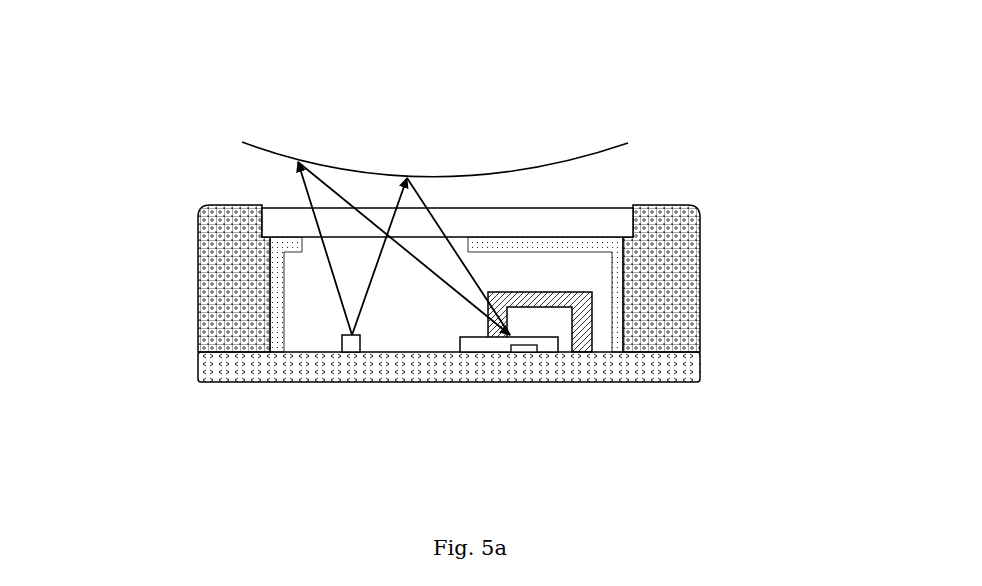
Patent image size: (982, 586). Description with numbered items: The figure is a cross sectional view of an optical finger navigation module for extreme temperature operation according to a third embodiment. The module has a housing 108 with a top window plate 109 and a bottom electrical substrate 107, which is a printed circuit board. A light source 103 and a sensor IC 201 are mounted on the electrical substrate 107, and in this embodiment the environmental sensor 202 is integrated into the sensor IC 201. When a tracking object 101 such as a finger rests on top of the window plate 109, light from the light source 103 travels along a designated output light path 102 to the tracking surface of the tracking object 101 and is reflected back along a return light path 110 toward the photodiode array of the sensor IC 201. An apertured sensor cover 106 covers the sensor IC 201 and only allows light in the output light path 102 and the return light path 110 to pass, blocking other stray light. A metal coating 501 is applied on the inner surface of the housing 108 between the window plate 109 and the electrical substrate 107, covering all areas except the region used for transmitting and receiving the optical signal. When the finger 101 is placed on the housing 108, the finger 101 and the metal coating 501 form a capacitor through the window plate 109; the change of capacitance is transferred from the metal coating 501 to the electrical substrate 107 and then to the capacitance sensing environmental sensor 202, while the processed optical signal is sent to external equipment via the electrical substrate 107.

The tracking object 101 is at (217, 48).
The output light path 102 is at (94, 195).
The light source 103 is at (229, 481).
The apertured sensor cover 106 is at (674, 468).
The bottom electrical substrate 107 is at (812, 413).
The housing 108 is at (852, 224).
The window plate 109 is at (777, 114).
The return light path 110 is at (594, 77).
The sensor IC 201 is at (426, 501).
The environmental sensor 202 is at (552, 473).
The metal coating 501 is at (96, 385).